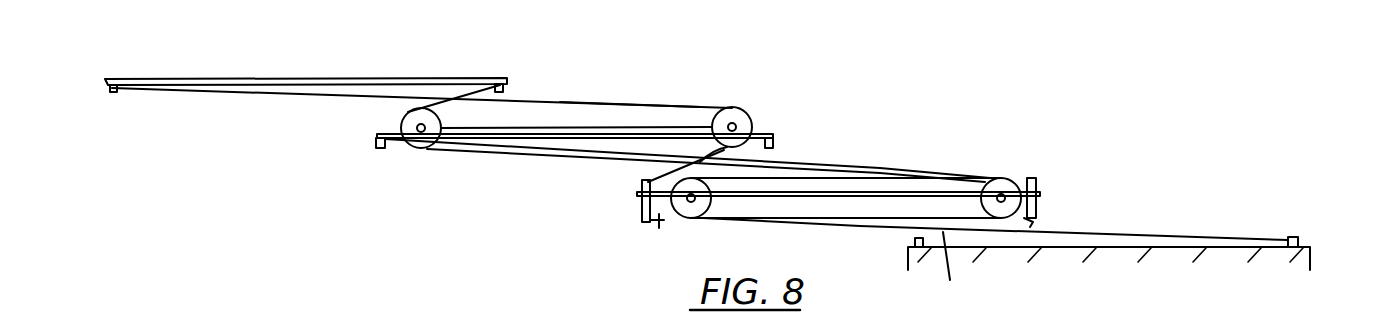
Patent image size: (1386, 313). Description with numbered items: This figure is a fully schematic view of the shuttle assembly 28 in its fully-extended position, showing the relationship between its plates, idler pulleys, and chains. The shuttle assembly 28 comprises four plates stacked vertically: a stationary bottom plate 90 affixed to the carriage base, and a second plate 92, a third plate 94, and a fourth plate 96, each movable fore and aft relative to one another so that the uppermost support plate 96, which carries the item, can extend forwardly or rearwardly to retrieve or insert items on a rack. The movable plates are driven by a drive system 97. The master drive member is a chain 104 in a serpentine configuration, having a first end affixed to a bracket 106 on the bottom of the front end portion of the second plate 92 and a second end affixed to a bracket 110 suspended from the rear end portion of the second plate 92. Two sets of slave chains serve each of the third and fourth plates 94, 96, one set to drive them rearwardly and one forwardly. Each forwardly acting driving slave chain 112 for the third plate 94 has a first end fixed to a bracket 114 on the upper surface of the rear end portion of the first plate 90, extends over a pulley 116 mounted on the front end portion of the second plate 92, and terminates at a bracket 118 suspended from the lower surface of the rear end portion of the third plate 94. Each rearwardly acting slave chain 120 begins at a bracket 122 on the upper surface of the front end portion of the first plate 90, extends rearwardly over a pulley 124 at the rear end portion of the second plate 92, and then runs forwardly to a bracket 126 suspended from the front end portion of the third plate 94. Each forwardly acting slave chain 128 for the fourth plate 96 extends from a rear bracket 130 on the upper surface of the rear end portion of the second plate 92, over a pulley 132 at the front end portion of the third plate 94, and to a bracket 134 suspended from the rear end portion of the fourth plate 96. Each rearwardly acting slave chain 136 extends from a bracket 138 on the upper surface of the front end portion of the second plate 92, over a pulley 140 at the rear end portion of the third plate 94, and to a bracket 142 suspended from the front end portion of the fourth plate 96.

The shuttle assembly 28 is at (967, 153).
The bottom plate 90 is at (1312, 263).
The second plate 92 is at (846, 201).
The third plate 94 is at (576, 123).
The fourth plate 96 is at (268, 48).
The drive system 97 is at (708, 80).
The chain 104 is at (657, 229).
The bracket 106 is at (640, 207).
The bracket 110 is at (1040, 200).
The forwardly acting driving slave chain 112 is at (1170, 233).
The bracket 114 is at (1298, 238).
The pulley 116 is at (712, 203).
The bracket 118 is at (774, 139).
The rearwardly acting slave chain 120 is at (381, 150).
The bracket 122 is at (914, 243).
The pulley 124 is at (985, 202).
The bracket 126 is at (375, 145).
The forwardly acting slave chain 128 is at (463, 94).
The rear bracket 130 is at (1038, 180).
The pulley 132 is at (401, 125).
The bracket 134 is at (503, 86).
The rearwardly acting slave chain 136 is at (640, 72).
The bracket 138 is at (642, 183).
The pulley 140 is at (743, 110).
The bracket 142 is at (110, 90).